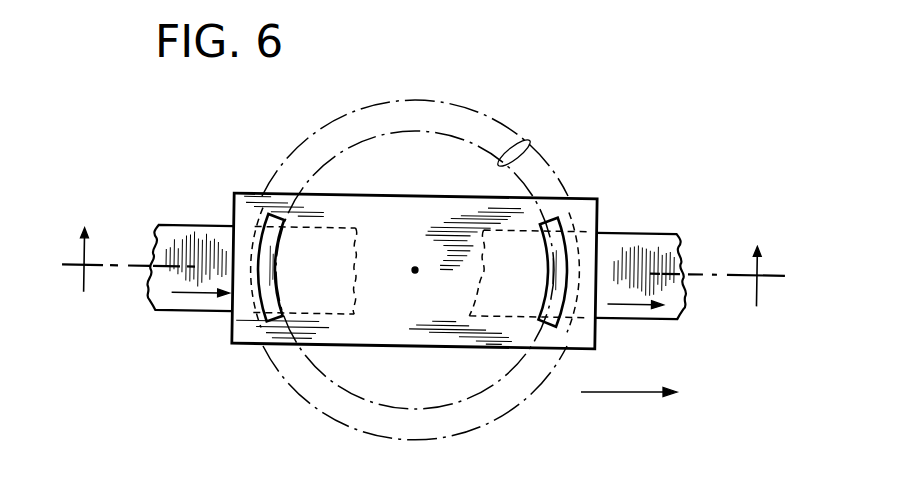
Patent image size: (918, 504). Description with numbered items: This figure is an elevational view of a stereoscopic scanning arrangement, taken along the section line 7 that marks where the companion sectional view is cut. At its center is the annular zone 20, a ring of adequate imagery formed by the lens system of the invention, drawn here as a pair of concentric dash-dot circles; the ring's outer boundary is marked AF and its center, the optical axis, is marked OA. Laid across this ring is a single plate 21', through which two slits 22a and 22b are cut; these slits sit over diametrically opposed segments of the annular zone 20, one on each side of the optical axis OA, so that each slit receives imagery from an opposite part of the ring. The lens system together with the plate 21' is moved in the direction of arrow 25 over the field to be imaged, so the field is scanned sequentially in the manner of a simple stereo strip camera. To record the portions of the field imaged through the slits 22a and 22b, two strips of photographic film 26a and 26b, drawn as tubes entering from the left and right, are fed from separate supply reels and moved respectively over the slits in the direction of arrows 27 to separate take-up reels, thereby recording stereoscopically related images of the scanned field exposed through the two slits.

The annular zone 20 is at (529, 145).
The plate 21' is at (414, 253).
The slit 22a is at (567, 224).
The slit 22b is at (268, 218).
The arrow 25 is at (638, 393).
The strip of photographic film 26a is at (672, 318).
The strip of photographic film 26b is at (195, 308).
The arrows 27 is at (184, 296).
The section line 7- 7 is at (419, 273).
The annular field AF is at (489, 113).
The optical axis OA is at (413, 274).